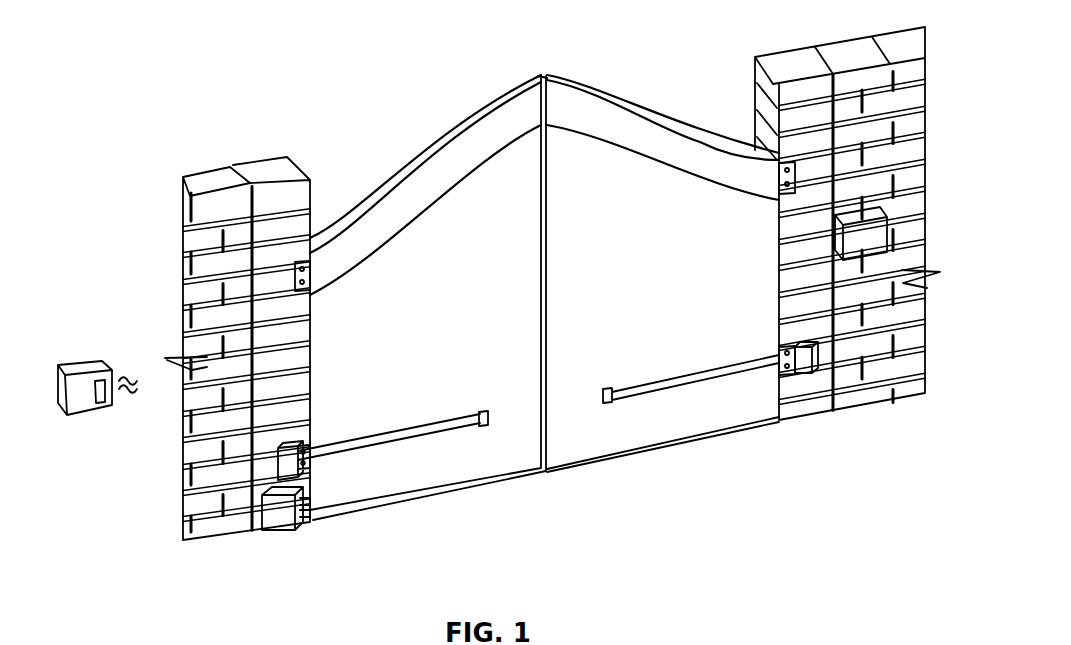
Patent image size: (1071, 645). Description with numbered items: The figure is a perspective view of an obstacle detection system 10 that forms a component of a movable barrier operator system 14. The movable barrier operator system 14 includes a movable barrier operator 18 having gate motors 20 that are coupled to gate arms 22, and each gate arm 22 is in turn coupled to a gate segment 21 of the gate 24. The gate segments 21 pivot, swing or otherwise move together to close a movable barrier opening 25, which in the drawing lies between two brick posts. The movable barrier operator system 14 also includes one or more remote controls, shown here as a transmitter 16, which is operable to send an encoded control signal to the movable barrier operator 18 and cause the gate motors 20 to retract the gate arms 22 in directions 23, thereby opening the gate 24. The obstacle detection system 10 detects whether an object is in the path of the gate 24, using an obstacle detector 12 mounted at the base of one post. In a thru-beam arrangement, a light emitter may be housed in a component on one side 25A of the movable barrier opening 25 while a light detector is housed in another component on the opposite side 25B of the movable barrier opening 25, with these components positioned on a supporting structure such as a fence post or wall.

The obstacle detection system 10 is at (515, 319).
The obstacle detector 12 is at (287, 530).
The movable barrier operator system 14 is at (170, 457).
The transmitter 16 is at (90, 362).
The movable barrier operator 18 is at (878, 228).
The gate motors 20 is at (278, 451).
The gate segment 21 is at (338, 253).
The gate arms 22 is at (418, 427).
The directions 23 is at (297, 383).
The gate 24 is at (534, 201).
The movable barrier opening 25 is at (550, 319).
The side of the movable barrier opening 25A is at (312, 524).
The opposite side of the movable barrier opening 25B is at (779, 434).